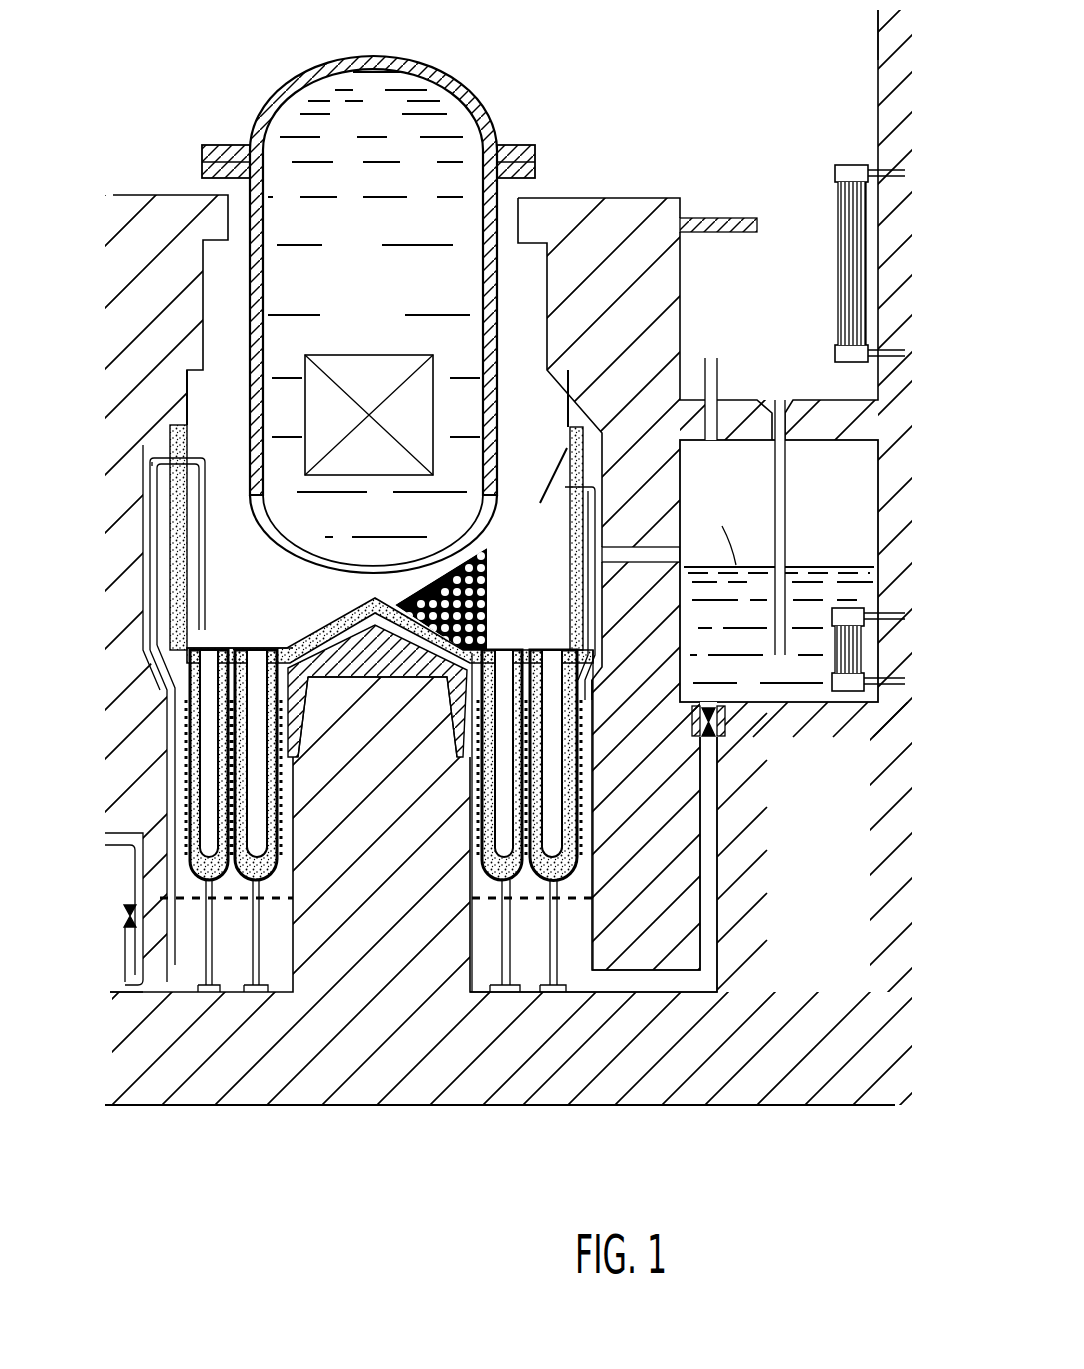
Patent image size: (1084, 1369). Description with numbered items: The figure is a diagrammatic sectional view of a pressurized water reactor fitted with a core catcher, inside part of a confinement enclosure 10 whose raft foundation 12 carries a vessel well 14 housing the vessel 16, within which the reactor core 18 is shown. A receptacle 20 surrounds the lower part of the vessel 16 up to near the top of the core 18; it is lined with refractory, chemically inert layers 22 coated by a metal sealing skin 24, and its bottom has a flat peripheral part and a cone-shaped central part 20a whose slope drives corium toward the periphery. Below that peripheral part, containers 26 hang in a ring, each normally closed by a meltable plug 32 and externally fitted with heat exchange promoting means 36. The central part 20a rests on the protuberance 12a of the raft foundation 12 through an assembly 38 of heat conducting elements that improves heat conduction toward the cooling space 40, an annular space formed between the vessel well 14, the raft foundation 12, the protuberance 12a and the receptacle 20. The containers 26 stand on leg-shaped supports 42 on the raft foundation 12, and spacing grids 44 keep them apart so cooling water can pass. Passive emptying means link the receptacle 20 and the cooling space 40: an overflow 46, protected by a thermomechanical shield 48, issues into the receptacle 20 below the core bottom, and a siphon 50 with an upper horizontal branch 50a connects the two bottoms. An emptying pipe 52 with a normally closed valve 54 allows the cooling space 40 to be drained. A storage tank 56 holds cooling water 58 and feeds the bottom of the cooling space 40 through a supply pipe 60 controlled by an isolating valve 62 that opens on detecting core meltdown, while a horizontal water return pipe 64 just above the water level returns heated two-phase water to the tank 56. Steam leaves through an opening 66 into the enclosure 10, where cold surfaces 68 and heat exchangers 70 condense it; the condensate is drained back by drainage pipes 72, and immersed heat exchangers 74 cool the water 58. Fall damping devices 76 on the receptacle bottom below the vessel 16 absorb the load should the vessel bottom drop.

The confinement enclosure 10 is at (892, 72).
The raft foundation 12 is at (372, 1103).
The protuberance 12a is at (408, 898).
The vessel well 14 is at (160, 215).
The vessel 16 is at (503, 287).
The reactor core 18 is at (357, 368).
The receptacle 20 is at (170, 442).
The central part 20a is at (330, 642).
The layers 22 is at (178, 572).
The metal sealing skin 24 is at (188, 382).
The containers 26 is at (178, 720).
The meltable plug 32 is at (250, 650).
The heat exchange promoting means 36 is at (218, 776).
The assembly of heat conducting elements 38 is at (385, 668).
The cooling space 40 is at (277, 947).
The supports 42 is at (257, 937).
The spacing grids 44 is at (580, 840).
The overflow 46 is at (580, 568).
The thermomechanical shield 48 is at (535, 498).
The siphon 50 is at (203, 502).
The upper horizontal branch 50a is at (150, 462).
The emptying pipe 52 is at (130, 982).
The valve 54 is at (128, 908).
The storage tank 56 is at (836, 462).
The cooling water 58 is at (708, 618).
The supply pipe 60 is at (708, 865).
The isolating valve 62 is at (712, 726).
The water return pipe 64 is at (640, 550).
The opening 66 is at (720, 360).
The cold surfaces 68 is at (720, 225).
The heat exchangers 70 is at (842, 210).
The drainage pipes 72 is at (785, 522).
The immersed heat exchangers 74 is at (840, 690).
The fall damping devices 76 is at (456, 592).